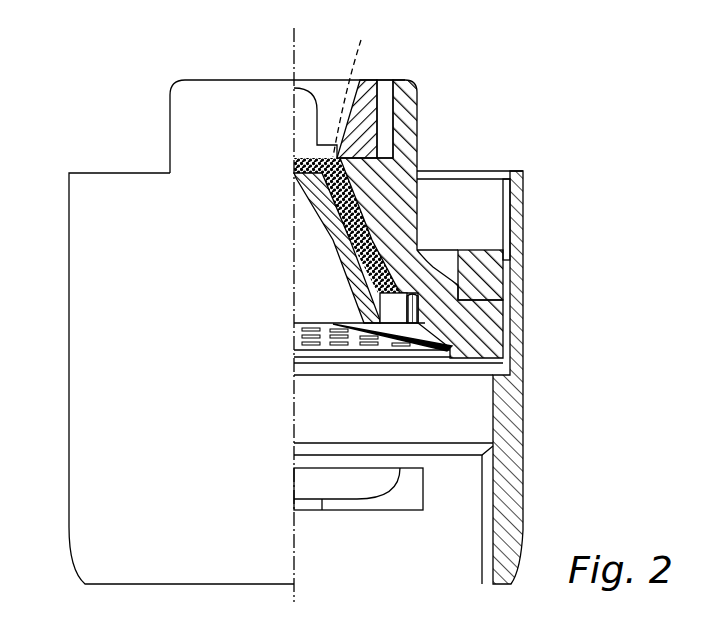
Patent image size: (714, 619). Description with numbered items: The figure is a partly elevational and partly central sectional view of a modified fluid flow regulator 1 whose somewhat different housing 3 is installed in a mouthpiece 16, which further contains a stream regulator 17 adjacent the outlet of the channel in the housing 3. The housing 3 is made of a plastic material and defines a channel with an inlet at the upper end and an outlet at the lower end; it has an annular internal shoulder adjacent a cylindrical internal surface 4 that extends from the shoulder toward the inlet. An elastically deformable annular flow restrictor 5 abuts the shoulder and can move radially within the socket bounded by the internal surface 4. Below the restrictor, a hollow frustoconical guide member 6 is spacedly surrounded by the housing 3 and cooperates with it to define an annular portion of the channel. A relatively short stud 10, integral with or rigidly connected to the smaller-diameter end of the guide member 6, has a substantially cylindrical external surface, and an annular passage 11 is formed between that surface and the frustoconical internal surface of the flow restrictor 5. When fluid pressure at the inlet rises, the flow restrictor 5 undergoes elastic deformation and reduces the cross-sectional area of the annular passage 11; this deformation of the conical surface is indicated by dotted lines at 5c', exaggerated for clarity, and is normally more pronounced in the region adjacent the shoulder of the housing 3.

The fluid flow regulator 1 is at (295, 315).
The housing 3 is at (407, 133).
The cylindrical internal surface 4 is at (383, 123).
The flow restrictor 5 is at (370, 80).
The deformed conical internal surface 5c' is at (353, 93).
The frustoconical guide member 6 is at (343, 253).
The stud 10 is at (303, 127).
The annular passage 11 is at (321, 100).
The mouthpiece 16 is at (85, 401).
The stream regulator 17 is at (480, 400).